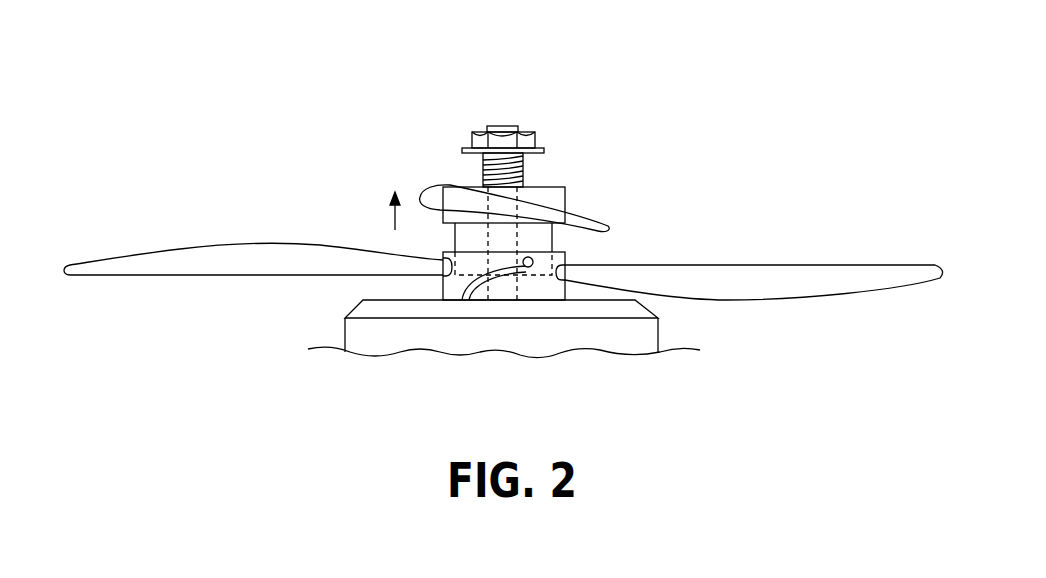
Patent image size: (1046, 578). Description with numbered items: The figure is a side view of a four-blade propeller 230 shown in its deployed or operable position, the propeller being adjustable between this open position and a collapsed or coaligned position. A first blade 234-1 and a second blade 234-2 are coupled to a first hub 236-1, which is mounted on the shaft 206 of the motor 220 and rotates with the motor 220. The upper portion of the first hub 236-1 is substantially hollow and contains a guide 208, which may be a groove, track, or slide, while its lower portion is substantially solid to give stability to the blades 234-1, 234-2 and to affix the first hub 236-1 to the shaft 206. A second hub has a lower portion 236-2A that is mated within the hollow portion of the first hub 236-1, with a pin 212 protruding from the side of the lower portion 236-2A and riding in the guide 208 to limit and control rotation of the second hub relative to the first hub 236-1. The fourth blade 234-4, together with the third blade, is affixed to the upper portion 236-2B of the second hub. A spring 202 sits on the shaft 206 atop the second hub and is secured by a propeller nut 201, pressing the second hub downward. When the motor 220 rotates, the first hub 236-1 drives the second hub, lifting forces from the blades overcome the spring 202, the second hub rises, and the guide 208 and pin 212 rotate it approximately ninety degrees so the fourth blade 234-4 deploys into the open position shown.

The propeller 230 is at (515, 74).
The propeller nut 201 is at (527, 130).
The spring 202 is at (523, 170).
The shaft 206 is at (503, 237).
The pin 212 is at (534, 259).
The guide 208 is at (482, 293).
The fourth blade 234-4 is at (595, 222).
The upper portion of the second hub 236-2B is at (440, 213).
The lower portion of the second hub 236-2A is at (467, 233).
The first hub 236-1 is at (443, 261).
The second blade 234-2 is at (150, 262).
The first blade 234-1 is at (778, 290).
The motor 220 is at (620, 337).